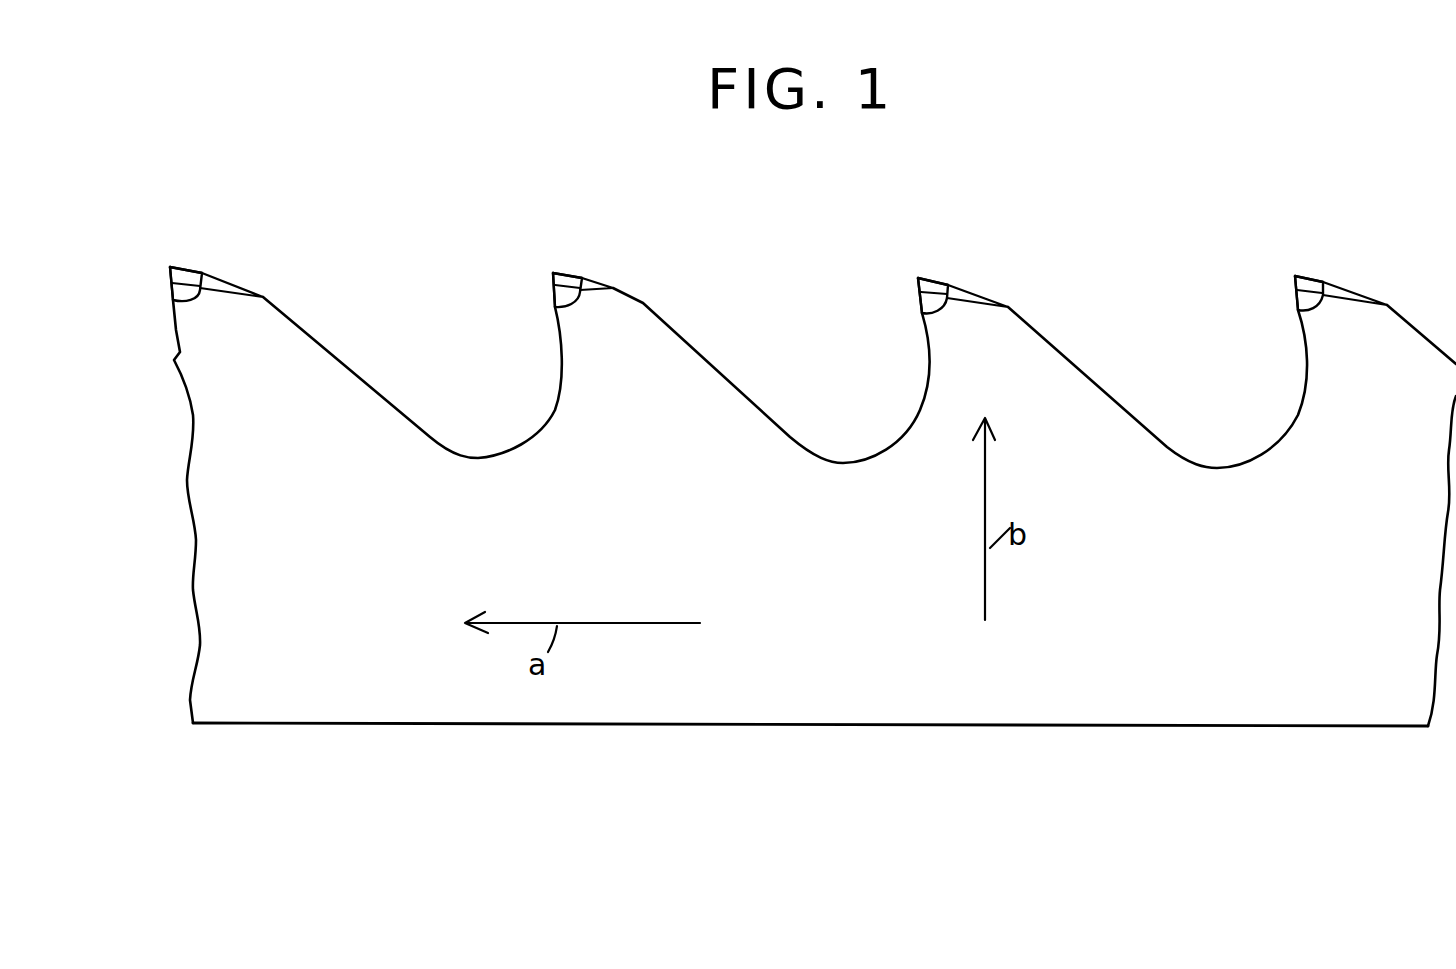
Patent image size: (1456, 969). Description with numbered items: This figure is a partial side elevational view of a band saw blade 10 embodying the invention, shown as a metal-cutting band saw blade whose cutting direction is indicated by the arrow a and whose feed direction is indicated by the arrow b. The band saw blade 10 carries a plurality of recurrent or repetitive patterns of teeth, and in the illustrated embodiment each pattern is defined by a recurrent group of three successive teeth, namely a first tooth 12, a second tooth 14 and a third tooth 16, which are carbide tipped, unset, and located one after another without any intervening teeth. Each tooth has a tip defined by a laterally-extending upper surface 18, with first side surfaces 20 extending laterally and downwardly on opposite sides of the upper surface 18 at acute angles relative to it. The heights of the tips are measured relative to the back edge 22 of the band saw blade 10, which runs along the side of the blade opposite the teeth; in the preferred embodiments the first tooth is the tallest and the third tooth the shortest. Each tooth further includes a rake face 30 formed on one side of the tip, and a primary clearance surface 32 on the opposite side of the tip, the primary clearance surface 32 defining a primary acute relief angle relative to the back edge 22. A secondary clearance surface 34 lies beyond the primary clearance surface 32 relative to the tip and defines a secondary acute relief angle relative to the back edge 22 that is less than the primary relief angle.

The band saw blade 10 is at (722, 812).
The first tooth 12 is at (203, 231).
The second tooth 14 is at (600, 243).
The third tooth 16 is at (965, 253).
The upper surface 18 is at (170, 266).
The first side surfaces 20 is at (202, 297).
The back edge 22 is at (409, 725).
The rake face 30 is at (170, 283).
The primary clearance surface 32 is at (188, 268).
The secondary clearance surface 34 is at (243, 283).